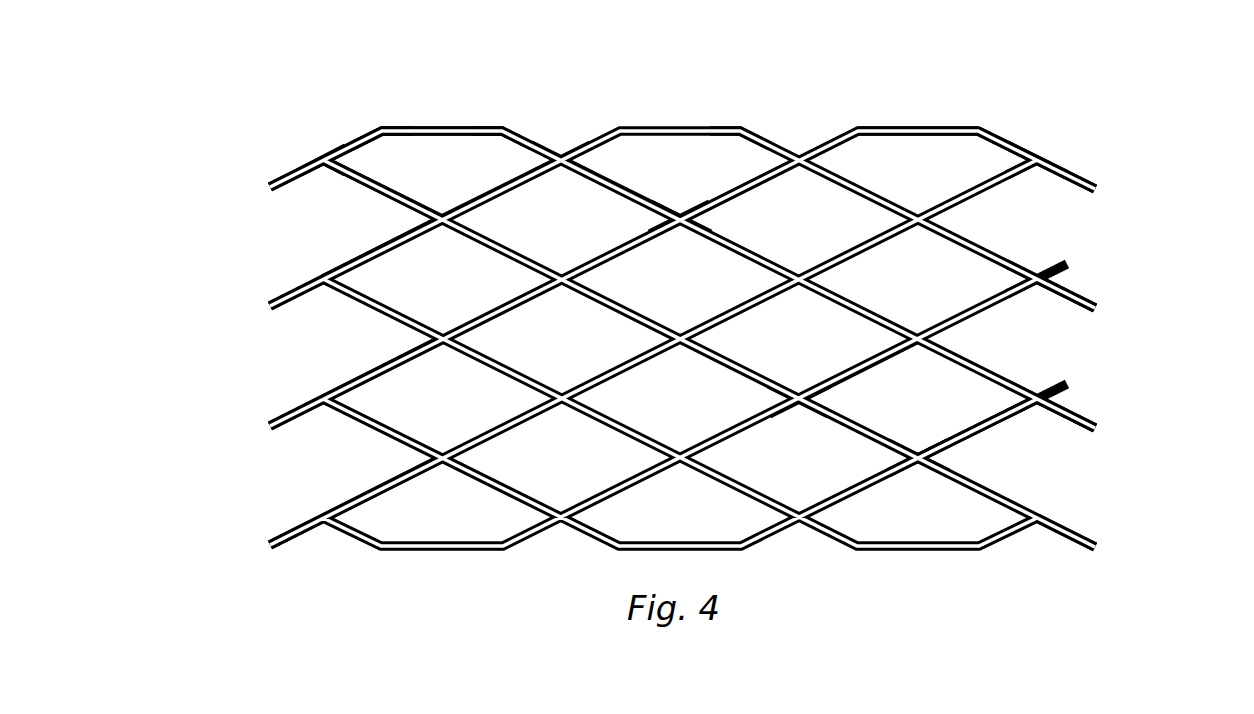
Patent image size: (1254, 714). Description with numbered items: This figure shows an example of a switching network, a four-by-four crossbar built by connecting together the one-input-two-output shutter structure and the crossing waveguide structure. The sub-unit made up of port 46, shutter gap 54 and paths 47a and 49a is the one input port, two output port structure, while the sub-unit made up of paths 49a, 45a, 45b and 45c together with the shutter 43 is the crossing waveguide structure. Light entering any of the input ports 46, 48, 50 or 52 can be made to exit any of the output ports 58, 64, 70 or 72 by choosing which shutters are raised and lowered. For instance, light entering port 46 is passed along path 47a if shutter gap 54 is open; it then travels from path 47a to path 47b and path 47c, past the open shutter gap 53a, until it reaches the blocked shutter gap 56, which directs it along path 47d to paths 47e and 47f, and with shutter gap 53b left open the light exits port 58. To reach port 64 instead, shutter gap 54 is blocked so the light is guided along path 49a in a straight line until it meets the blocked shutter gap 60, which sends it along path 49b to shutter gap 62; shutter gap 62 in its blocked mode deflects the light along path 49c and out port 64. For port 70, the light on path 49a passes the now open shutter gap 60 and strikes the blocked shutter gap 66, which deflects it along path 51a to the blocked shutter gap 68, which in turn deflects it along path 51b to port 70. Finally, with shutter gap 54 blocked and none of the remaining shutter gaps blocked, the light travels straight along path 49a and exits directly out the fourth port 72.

The shutter 43 is at (682, 339).
The path 45a is at (393, 253).
The path 45b is at (620, 197).
The path 45c is at (487, 195).
The port 46 is at (263, 191).
The path 47a is at (369, 128).
The path 47b is at (477, 127).
The path 47c is at (544, 147).
The path 47d is at (738, 183).
The path 47e is at (935, 127).
The path 47f is at (1030, 148).
The port 48 is at (262, 304).
The path 49a is at (372, 203).
The path 49b is at (835, 373).
The path 49c is at (1085, 288).
The port 50 is at (265, 422).
The path 51a is at (993, 427).
The path 51b is at (1077, 402).
The port 52 is at (267, 540).
The shutter gap 53a is at (567, 152).
The shutter gap 53b is at (1043, 157).
The shutter gap 54 is at (323, 160).
The shutter gap 56 is at (683, 218).
The port 58 is at (1093, 174).
The shutter gap 60 is at (803, 398).
The shutter gap 62 is at (1047, 270).
The port 64 is at (1098, 302).
The shutter gap 66 is at (923, 458).
The shutter gap 68 is at (1040, 393).
The port 70 is at (1103, 418).
The port 72 is at (1107, 540).